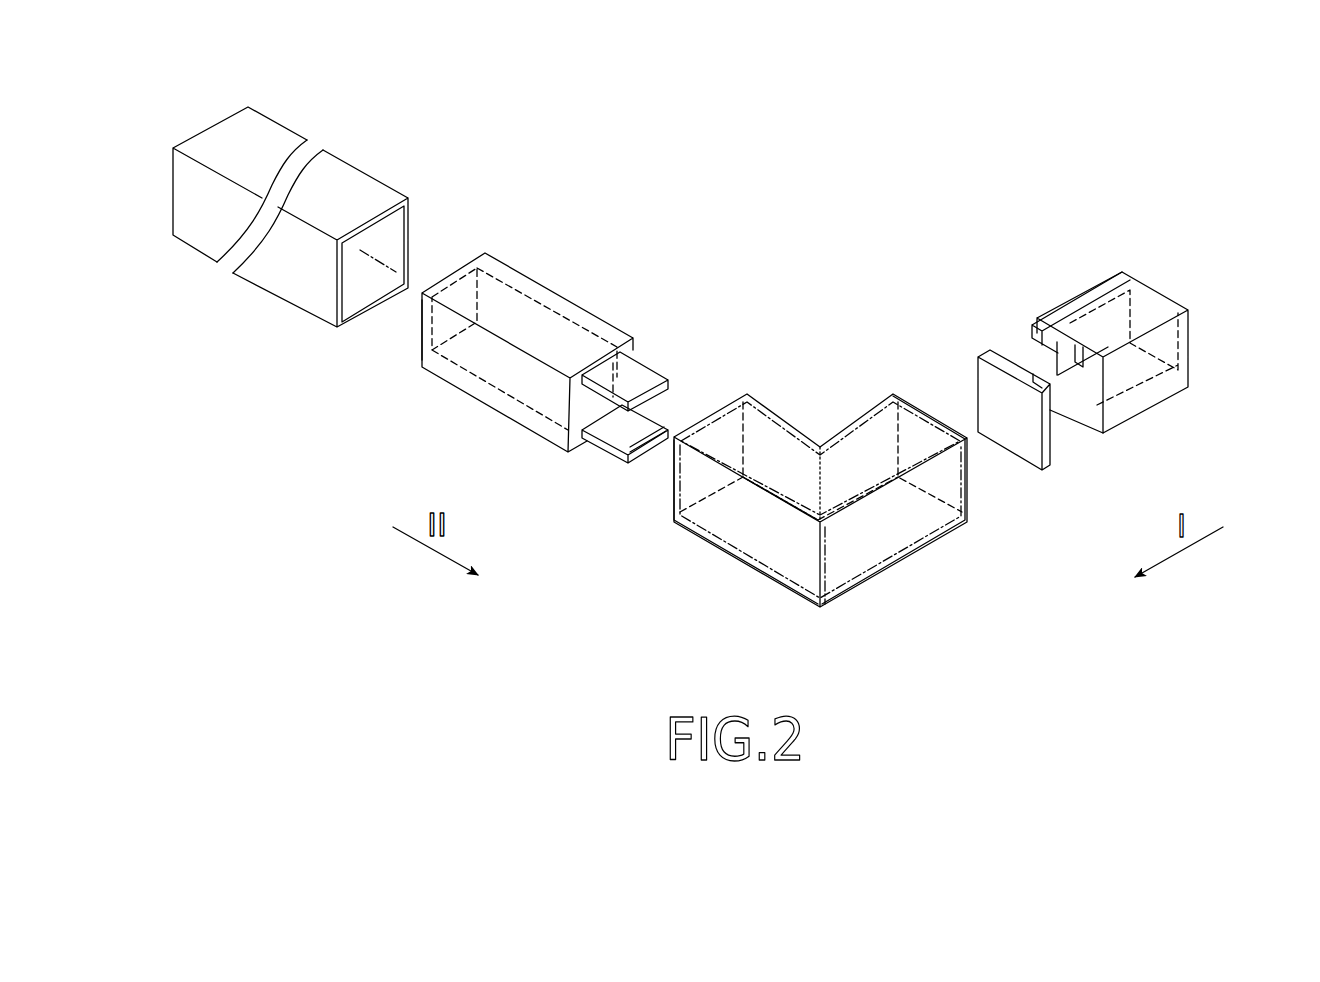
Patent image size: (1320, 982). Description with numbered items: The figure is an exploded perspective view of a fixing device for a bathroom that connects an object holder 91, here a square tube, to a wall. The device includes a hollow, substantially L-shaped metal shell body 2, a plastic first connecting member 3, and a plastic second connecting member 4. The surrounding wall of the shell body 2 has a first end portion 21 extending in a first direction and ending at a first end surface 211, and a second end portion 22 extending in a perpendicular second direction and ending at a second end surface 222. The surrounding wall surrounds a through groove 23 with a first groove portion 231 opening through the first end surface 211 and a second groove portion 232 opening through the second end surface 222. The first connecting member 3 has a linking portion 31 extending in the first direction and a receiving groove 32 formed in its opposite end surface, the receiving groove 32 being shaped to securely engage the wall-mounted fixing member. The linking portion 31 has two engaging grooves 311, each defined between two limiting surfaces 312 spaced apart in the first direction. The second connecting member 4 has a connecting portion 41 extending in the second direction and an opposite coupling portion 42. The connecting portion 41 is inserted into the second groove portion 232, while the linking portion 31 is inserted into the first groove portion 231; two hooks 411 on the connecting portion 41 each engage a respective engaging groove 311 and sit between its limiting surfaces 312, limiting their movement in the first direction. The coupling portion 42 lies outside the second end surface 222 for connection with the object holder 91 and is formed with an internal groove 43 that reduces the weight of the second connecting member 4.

The object holder 91 is at (378, 158).
The second connecting member 4 is at (568, 348).
The connecting portion 41 is at (641, 378).
The hooks 411 is at (612, 440).
The coupling portion 42 is at (440, 385).
The internal groove 43 is at (517, 402).
The shell body 2 is at (844, 484).
The first end portion 21 is at (932, 545).
The second end portion 22 is at (718, 550).
The through groove 23 is at (780, 548).
The first end surface 211 is at (927, 412).
The second end surface 222 is at (723, 403).
The first groove portion 231 is at (865, 433).
The second groove portion 232 is at (778, 443).
The first connecting member 3 is at (1110, 332).
The linking portion 31 is at (1042, 359).
The engaging grooves 311 is at (1072, 438).
The limiting surfaces 312 is at (1000, 350).
The receiving groove 32 is at (1165, 293).